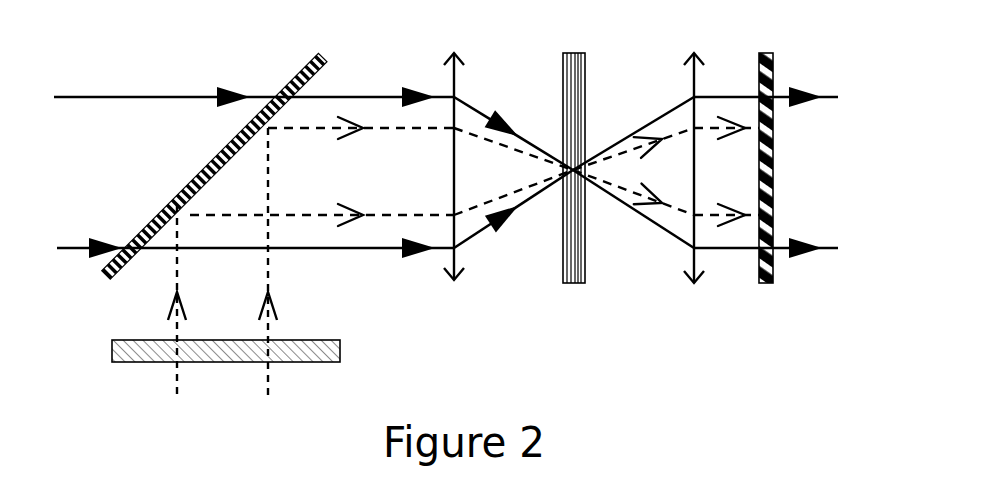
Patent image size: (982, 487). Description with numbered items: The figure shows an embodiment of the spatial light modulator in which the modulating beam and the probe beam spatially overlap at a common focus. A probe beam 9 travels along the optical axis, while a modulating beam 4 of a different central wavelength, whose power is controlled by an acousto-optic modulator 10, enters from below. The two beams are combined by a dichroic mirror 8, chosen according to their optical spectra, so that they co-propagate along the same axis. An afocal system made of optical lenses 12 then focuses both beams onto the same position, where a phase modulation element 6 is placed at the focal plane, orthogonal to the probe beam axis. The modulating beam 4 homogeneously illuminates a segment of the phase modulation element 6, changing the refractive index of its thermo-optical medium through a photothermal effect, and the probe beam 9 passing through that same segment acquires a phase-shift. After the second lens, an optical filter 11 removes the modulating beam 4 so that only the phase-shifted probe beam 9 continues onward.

The modulating beam 4 is at (271, 291).
The phase modulation element 6 is at (588, 55).
The dichroic mirror 8 is at (328, 54).
The probe beam 9 is at (203, 97).
The acousto-optic modulator 10 is at (342, 352).
The optical filter 11 is at (767, 55).
The optical lenses 12 is at (459, 47).